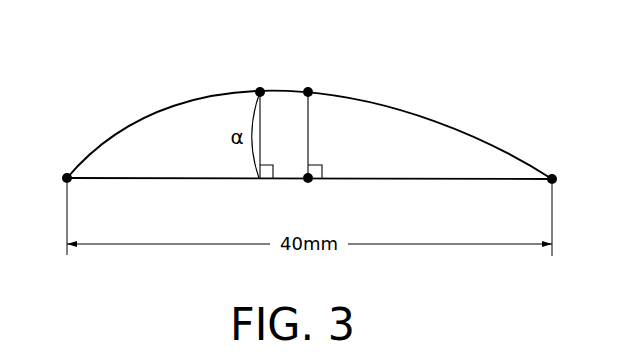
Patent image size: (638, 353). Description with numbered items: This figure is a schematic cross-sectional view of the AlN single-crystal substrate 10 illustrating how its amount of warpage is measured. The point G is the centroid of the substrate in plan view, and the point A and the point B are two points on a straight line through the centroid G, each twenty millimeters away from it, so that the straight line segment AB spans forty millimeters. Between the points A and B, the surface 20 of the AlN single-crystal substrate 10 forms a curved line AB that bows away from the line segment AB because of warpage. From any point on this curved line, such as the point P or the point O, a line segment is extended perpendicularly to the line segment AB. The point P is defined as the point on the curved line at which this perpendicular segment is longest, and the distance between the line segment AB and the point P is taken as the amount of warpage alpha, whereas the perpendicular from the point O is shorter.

The AlN single-crystal substrate 10 is at (321, 94).
The surface 20 is at (512, 80).
The point A is at (51, 167).
The point B is at (568, 170).
The point P is at (263, 116).
The point O is at (317, 119).
The point G is at (375, 194).